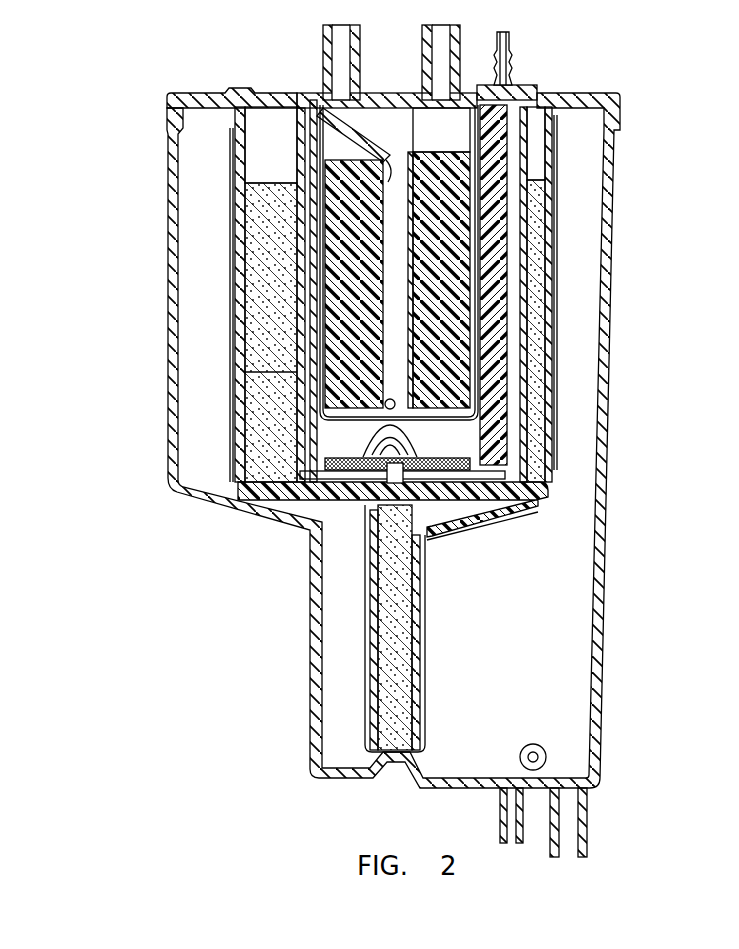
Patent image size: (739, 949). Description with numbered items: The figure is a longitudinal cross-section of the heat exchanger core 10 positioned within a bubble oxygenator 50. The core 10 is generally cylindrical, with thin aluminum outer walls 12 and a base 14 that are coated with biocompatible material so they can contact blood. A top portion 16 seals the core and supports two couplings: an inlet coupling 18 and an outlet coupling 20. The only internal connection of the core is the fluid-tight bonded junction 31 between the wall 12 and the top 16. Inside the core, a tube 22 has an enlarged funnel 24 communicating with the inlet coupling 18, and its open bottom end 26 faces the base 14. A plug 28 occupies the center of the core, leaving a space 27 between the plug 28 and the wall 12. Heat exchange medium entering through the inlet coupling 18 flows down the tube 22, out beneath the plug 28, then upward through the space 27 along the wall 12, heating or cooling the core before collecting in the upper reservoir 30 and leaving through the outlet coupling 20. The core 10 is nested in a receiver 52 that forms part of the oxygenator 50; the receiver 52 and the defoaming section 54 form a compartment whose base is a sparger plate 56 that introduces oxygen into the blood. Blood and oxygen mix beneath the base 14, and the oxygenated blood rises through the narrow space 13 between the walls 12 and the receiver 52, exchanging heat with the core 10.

The heat exchanger core 10 is at (316, 82).
The outer walls 12 is at (480, 127).
The space 13 is at (500, 237).
The base 14 is at (432, 425).
The top portion 16 is at (380, 93).
The inlet coupling 18 is at (362, 28).
The outlet coupling 20 is at (460, 28).
The tube 22 is at (362, 158).
The enlarged funnel 24 is at (364, 134).
The bottom end 26 is at (380, 458).
The space 27 is at (318, 163).
The plug 28 is at (451, 246).
The upper reservoir 30 is at (455, 135).
The junction 31 is at (316, 88).
The bubble oxygenator 50 is at (150, 352).
The receiver 52 is at (495, 310).
The defoaming section 54 is at (277, 258).
The sparger plate 56 is at (343, 470).